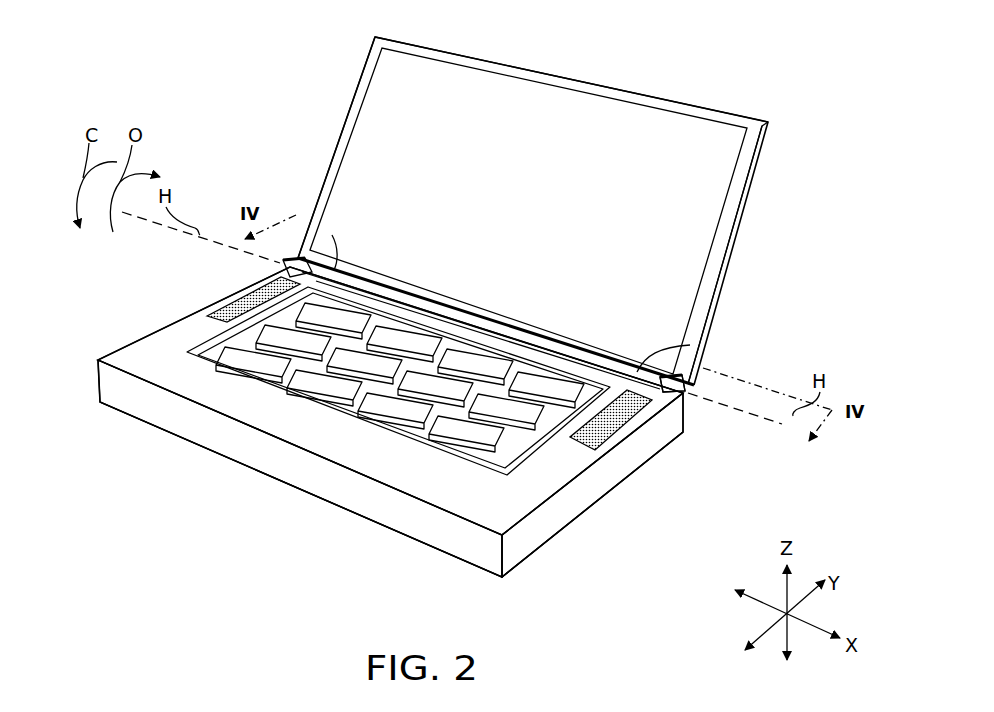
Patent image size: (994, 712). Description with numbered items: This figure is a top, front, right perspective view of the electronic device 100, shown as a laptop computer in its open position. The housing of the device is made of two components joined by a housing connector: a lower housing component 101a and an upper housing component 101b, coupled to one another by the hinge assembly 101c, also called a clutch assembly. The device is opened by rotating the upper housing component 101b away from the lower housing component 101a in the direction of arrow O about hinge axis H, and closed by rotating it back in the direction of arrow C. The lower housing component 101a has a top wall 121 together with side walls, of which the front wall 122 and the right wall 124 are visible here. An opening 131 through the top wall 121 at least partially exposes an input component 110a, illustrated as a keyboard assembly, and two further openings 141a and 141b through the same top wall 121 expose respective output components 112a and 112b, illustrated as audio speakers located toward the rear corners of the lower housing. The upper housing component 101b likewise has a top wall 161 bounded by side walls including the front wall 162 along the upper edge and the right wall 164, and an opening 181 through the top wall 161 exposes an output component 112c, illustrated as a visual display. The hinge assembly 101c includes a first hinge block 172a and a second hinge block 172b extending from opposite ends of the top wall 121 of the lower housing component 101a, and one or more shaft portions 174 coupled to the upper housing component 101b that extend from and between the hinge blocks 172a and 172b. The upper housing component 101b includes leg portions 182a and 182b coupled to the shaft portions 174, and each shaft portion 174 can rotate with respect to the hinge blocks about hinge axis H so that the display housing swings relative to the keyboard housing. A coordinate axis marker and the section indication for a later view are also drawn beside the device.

The electronic device 100 is at (288, 609).
The lower housing component 101a is at (551, 556).
The upper housing component 101b is at (780, 135).
The hinge assembly 101c is at (695, 404).
The input component 110a is at (197, 355).
The output component 112a is at (198, 298).
The opening 141a is at (208, 315).
The output component 112b is at (653, 442).
The opening 141b is at (645, 408).
The output component 112c is at (495, 211).
The opening 181 is at (347, 130).
The top wall 121 is at (488, 517).
The front wall 122 is at (123, 402).
The right wall 124 is at (613, 483).
The opening 131 is at (440, 452).
The top wall 161 is at (358, 84).
The front wall 162 is at (533, 64).
The right wall 164 is at (743, 212).
The first hinge block 172a is at (283, 268).
The second hinge block 172b is at (690, 388).
The shaft portion 174 is at (550, 350).
The leg portion 182a is at (332, 235).
The leg portion 182b is at (690, 345).